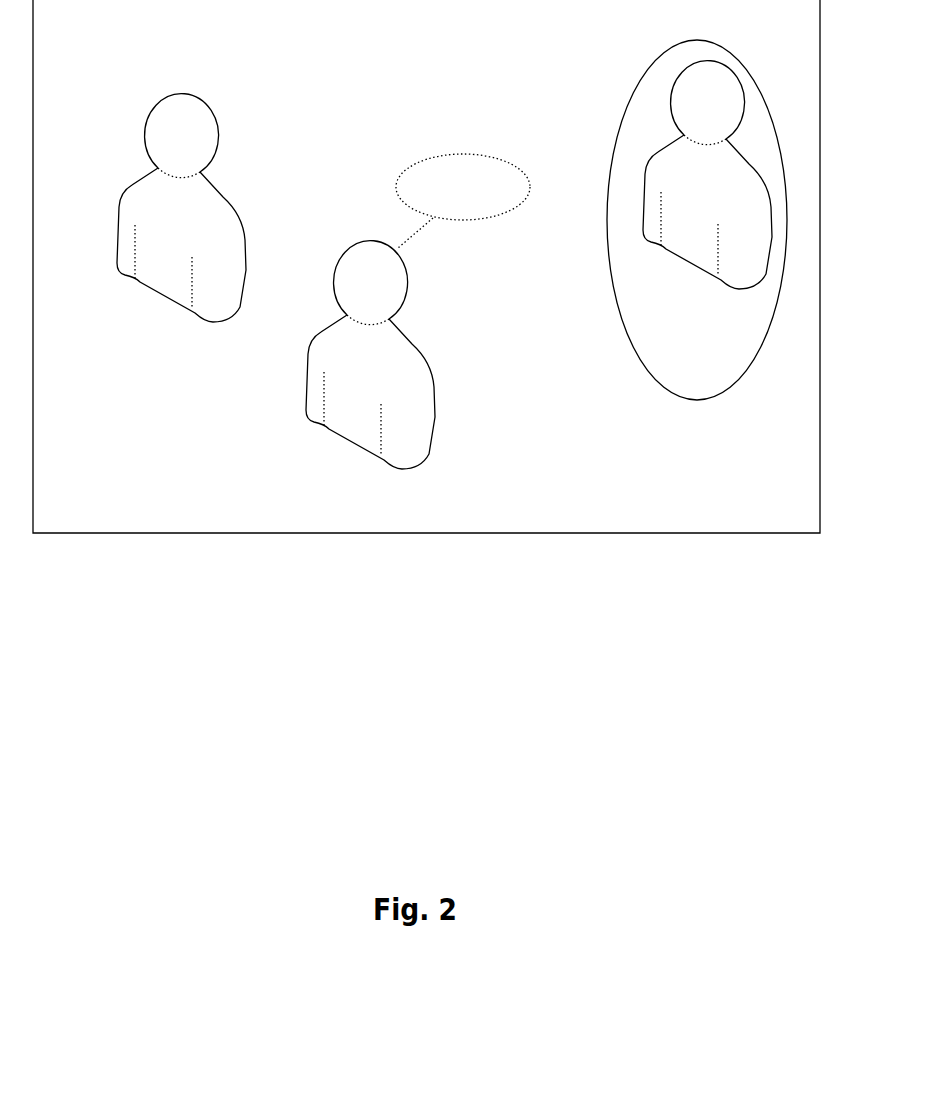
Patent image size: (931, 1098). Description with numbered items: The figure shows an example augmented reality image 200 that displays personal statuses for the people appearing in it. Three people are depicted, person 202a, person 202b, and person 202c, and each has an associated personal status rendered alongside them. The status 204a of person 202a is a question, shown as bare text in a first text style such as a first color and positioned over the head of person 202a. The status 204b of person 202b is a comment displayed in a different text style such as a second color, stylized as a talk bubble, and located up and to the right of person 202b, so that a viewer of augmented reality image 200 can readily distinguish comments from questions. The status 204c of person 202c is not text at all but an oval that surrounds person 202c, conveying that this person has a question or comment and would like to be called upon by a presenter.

The augmented reality image 200 is at (488, 533).
The person 202a is at (213, 323).
The person 202b is at (403, 469).
The person 202c is at (738, 289).
The personal status 204a is at (179, 71).
The personal status 204b is at (463, 201).
The personal status 204c is at (633, 100).